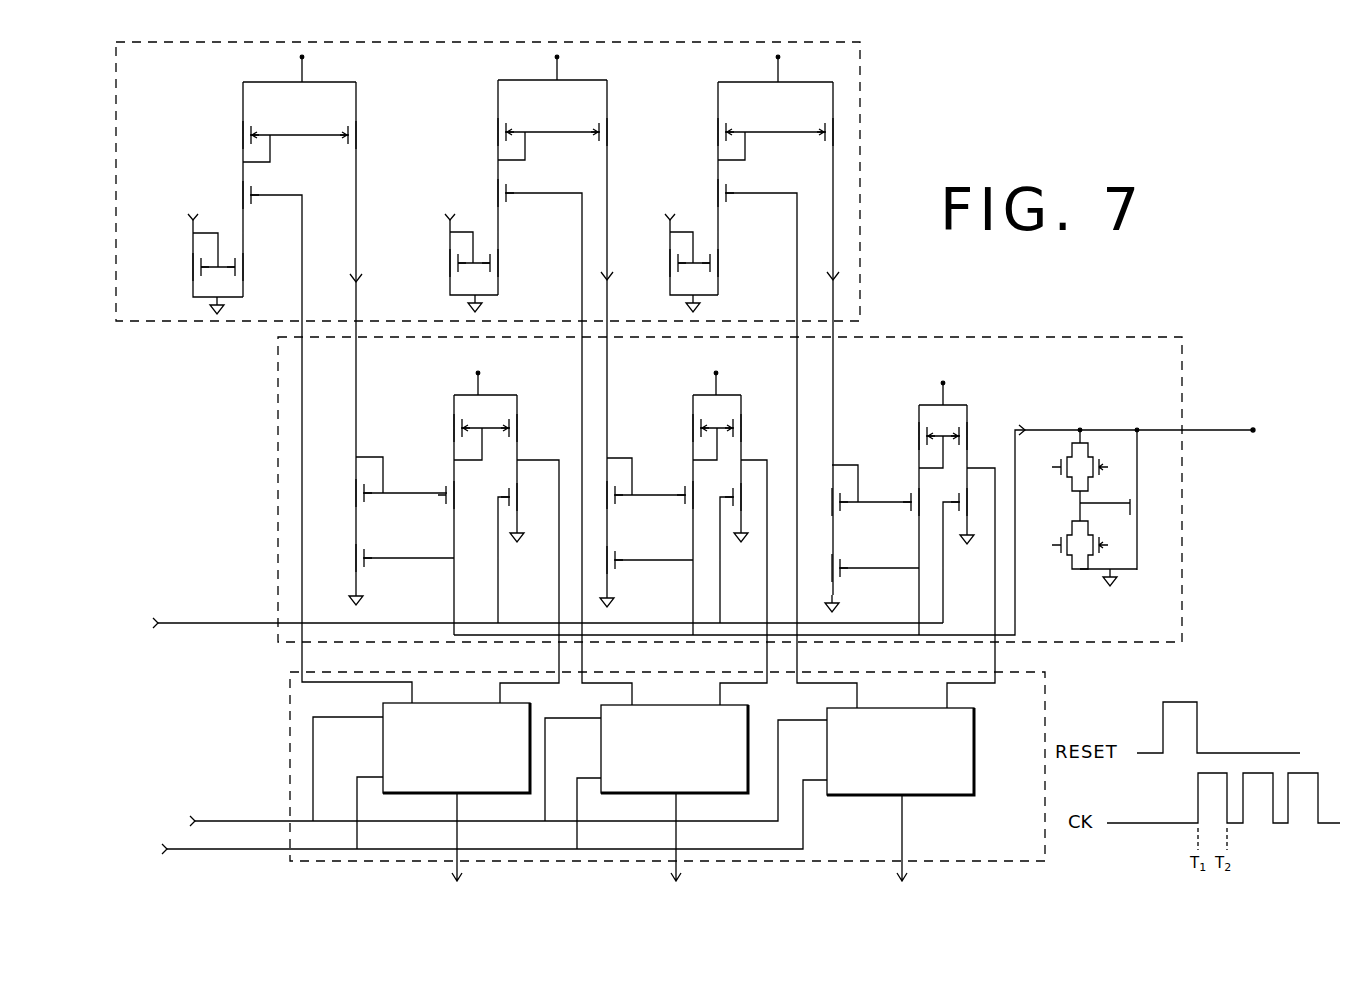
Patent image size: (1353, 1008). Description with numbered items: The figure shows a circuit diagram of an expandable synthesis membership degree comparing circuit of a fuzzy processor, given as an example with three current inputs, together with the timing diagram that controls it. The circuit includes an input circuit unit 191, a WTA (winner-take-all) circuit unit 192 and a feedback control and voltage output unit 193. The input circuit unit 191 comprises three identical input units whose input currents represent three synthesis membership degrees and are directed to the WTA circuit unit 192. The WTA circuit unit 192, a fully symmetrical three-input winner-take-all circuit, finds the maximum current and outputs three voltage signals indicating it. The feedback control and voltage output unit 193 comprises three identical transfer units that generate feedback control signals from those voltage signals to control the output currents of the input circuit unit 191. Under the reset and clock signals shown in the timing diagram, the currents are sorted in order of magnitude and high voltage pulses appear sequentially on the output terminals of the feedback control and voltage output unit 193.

The input circuit unit 191 is at (147, 312).
The WTA circuit unit 192 is at (278, 478).
The feedback control and voltage output unit 193 is at (290, 744).